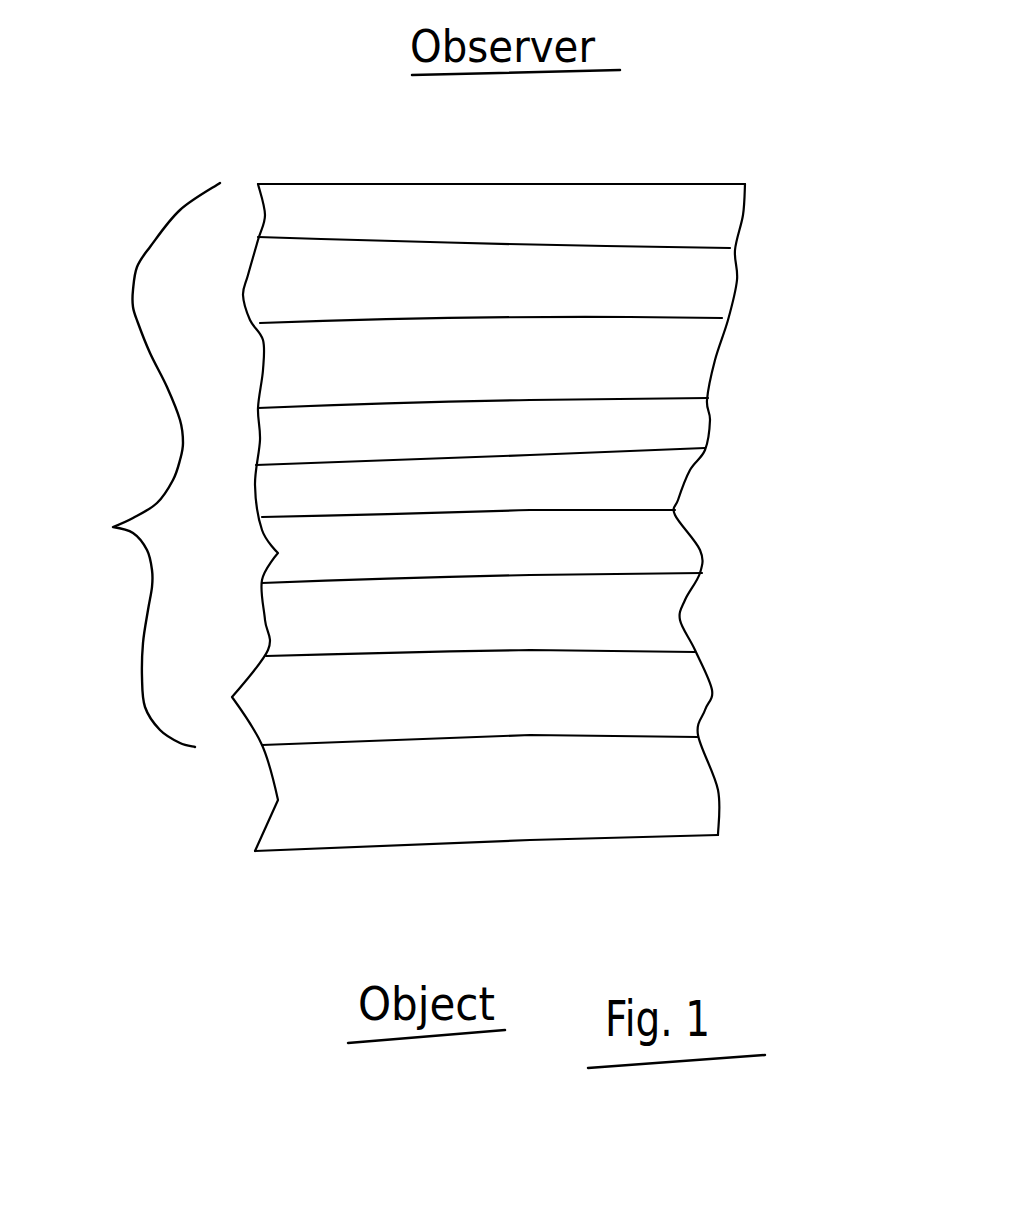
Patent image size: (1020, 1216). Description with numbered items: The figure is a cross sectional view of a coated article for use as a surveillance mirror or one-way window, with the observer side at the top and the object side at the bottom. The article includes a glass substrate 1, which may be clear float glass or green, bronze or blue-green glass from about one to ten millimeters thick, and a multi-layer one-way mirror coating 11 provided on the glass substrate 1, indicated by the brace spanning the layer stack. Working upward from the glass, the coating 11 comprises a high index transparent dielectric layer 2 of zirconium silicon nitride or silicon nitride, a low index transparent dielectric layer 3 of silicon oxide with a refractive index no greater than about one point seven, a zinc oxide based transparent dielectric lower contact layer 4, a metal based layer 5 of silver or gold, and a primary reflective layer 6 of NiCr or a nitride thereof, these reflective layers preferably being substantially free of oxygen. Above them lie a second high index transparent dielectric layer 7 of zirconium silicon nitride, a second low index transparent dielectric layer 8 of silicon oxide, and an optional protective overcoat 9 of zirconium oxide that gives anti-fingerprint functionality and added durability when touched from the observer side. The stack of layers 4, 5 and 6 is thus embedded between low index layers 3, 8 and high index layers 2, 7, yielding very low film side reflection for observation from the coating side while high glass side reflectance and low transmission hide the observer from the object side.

The glass substrate 1 is at (700, 800).
The transparent dielectric layer 2 is at (693, 697).
The low index transparent dielectric layer 3 is at (665, 630).
The transparent dielectric lower contact layer 4 is at (675, 545).
The metal based layer 5 is at (665, 475).
The primary reflective layer 6 is at (685, 425).
The transparent dielectric layer 7 is at (675, 363).
The low index transparent dielectric layer 8 is at (710, 287).
The protective overcoat 9 is at (715, 215).
The multi-layer one-way mirror coating 11 is at (7, 597).